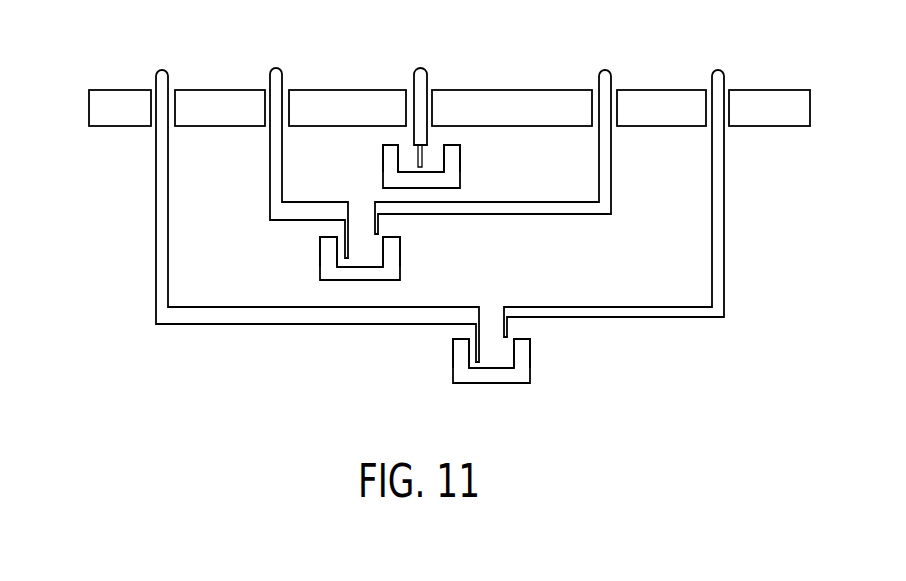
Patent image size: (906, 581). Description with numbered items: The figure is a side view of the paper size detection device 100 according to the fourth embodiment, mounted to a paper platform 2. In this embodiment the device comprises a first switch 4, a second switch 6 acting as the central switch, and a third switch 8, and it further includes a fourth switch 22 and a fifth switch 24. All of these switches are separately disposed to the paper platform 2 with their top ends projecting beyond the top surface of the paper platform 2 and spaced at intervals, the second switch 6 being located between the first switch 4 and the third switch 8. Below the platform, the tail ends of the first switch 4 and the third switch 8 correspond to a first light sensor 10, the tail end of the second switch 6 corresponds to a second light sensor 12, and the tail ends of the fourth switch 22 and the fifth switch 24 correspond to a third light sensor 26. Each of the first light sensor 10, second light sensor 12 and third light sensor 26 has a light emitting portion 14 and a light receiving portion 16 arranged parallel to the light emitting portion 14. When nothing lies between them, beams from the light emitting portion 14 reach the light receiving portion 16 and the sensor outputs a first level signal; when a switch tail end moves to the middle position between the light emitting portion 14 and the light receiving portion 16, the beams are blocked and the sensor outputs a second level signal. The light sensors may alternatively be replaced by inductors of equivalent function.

The paper size detection device 100 is at (118, 265).
The paper platform 2 is at (738, 90).
The fourth switch 22 is at (172, 68).
The first switch 4 is at (270, 193).
The second switch 6 is at (417, 68).
The third switch 8 is at (605, 68).
The fifth switch 24 is at (718, 68).
The second light sensor 12 is at (432, 180).
The first light sensor 10 is at (320, 277).
The third light sensor 26 is at (453, 378).
The light emitting portion 14 is at (392, 157).
The light receiving portion 16 is at (455, 157).